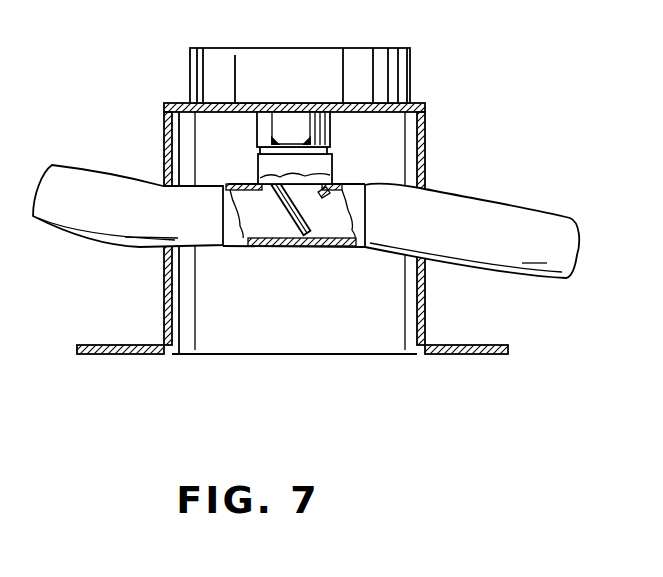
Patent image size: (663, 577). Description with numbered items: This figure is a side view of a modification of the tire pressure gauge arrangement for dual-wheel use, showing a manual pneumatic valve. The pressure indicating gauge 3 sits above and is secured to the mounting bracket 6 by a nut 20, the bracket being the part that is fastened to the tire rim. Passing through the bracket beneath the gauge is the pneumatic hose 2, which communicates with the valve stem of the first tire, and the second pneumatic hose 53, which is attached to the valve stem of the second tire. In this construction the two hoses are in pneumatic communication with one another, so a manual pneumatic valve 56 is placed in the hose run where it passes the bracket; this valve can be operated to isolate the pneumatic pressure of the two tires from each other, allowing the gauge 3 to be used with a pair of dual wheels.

The pneumatic hose 2 is at (453, 217).
The pressure indicating gauge 3 is at (305, 57).
The mounting bracket 6 is at (426, 117).
The nut 20 is at (327, 128).
The second pneumatic hose 53 is at (92, 222).
The manual pneumatic valve 56 is at (293, 247).